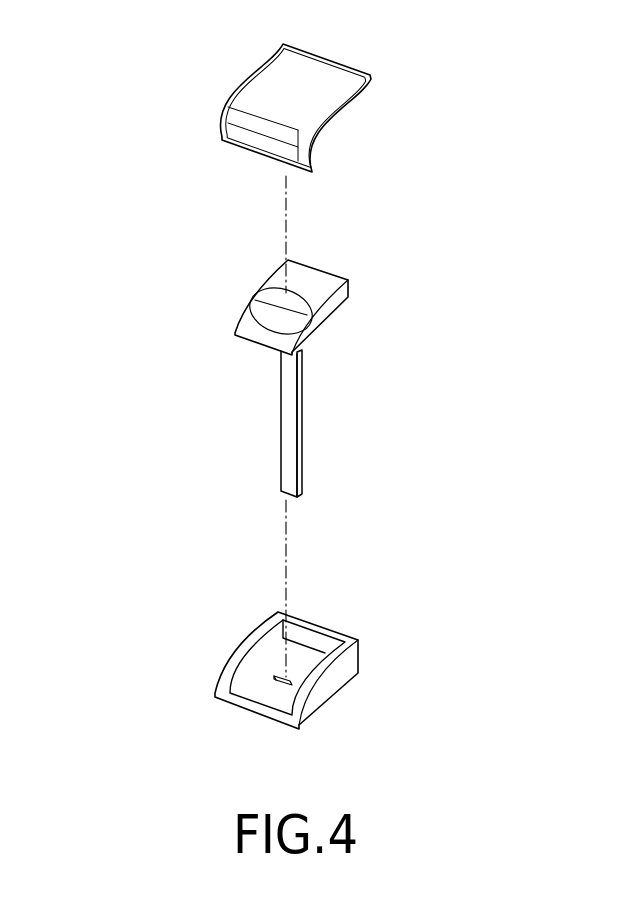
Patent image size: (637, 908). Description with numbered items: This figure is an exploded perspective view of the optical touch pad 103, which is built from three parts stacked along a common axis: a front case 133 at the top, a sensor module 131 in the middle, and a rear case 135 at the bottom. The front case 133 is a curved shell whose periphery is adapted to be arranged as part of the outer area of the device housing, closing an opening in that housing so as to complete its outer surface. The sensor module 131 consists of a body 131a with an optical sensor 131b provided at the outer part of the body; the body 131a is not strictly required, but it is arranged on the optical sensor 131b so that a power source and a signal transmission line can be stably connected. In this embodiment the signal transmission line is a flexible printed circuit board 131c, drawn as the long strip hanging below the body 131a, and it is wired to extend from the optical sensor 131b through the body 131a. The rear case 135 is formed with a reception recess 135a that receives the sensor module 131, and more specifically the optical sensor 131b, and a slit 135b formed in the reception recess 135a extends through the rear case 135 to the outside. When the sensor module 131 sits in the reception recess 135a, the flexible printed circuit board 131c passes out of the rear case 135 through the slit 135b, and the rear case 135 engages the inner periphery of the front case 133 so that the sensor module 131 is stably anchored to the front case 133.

The touch pad 103 is at (104, 86).
The front case 133 is at (323, 88).
The sensor module 131 is at (328, 268).
The body 131a is at (333, 303).
The optical sensor 131b is at (268, 323).
The flexible printed circuit board 131c is at (300, 430).
The rear case 135 is at (374, 651).
The reception recess 135a is at (313, 640).
The slit 135b is at (272, 678).